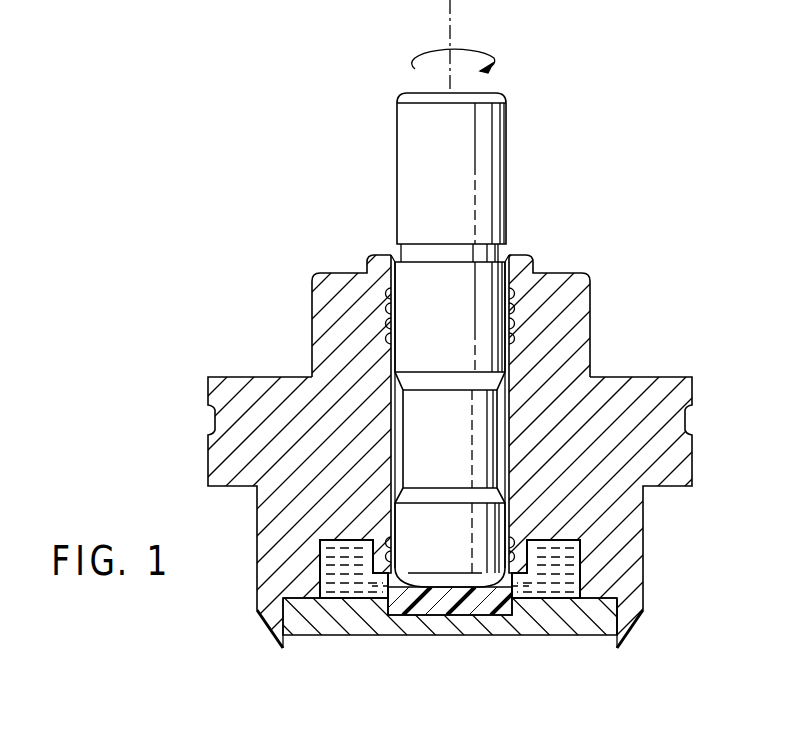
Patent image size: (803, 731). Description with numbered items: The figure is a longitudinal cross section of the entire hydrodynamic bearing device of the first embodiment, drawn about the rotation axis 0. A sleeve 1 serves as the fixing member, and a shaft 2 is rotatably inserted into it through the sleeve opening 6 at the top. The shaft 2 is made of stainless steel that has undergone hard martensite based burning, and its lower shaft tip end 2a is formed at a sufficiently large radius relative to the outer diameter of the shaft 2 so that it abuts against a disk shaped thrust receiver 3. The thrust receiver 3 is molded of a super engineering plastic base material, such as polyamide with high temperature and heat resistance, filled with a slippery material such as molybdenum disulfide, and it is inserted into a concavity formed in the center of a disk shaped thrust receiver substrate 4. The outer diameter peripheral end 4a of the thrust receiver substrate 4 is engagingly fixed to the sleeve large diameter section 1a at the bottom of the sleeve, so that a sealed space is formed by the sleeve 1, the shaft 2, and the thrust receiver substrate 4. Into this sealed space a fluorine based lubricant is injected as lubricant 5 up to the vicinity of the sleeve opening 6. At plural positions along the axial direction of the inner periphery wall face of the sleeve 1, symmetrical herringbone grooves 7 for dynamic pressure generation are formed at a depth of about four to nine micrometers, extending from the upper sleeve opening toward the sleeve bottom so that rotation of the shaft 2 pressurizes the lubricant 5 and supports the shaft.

The rotation axis 0 is at (453, 46).
The sleeve 1 is at (572, 283).
The sleeve large diameter section 1a is at (632, 617).
The shaft 2 is at (492, 188).
The shaft tip end 2a is at (447, 580).
The thrust receiver 3 is at (403, 603).
The thrust receiver substrate 4 is at (487, 627).
The outer diameter peripheral end 4a is at (606, 618).
The lubricant 5 is at (398, 432).
The sleeve opening 6 is at (395, 257).
The herringbone groove 7 is at (513, 340).